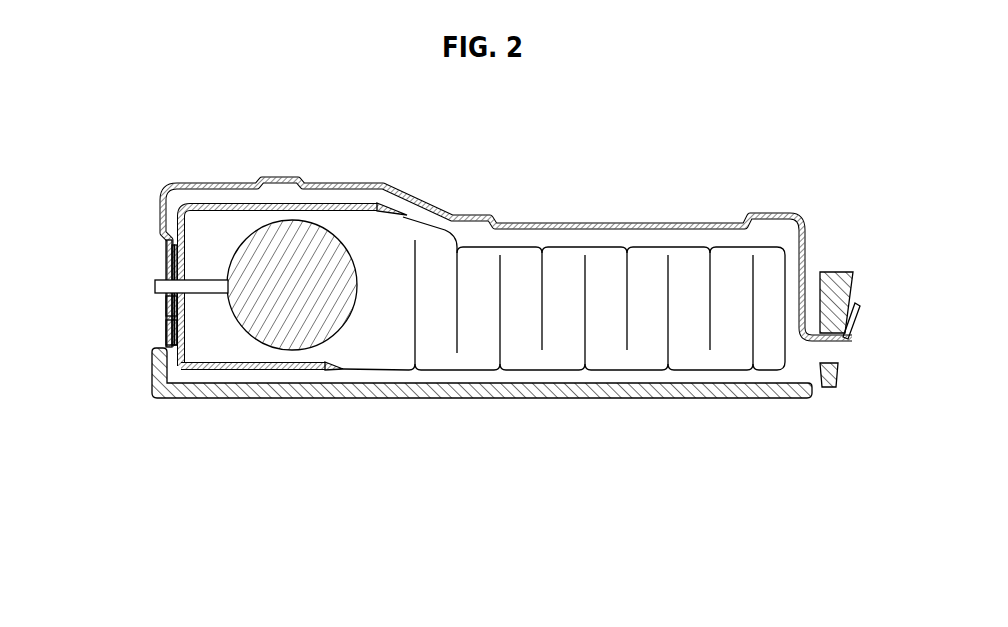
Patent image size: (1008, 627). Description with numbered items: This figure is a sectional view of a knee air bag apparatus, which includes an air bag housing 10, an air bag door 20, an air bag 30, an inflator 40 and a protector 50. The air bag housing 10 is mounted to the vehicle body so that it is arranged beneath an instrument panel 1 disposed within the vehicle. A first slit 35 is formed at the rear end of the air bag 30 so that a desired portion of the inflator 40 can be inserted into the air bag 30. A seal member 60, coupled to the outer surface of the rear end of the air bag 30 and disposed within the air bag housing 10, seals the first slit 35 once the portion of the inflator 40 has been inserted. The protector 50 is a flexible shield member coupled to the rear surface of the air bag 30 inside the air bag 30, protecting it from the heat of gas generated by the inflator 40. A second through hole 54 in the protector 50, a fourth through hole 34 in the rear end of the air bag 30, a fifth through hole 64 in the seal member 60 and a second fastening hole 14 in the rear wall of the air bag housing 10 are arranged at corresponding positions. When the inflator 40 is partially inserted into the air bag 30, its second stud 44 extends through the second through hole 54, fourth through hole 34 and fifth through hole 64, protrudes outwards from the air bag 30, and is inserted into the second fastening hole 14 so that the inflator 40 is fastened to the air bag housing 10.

The instrument panel 1 is at (852, 283).
The air bag housing 10 is at (650, 222).
The second fastening hole 14 is at (155, 290).
The air bag door 20 is at (683, 383).
The air bag 30 is at (229, 368).
The fourth through hole 34 is at (171, 304).
The first slit 35 is at (170, 331).
The inflator 40 is at (297, 328).
The second stud 44 is at (190, 296).
The protector 50 is at (165, 249).
The second through hole 54 is at (188, 278).
The seal member 60 is at (160, 258).
The fifth through hole 64 is at (168, 277).